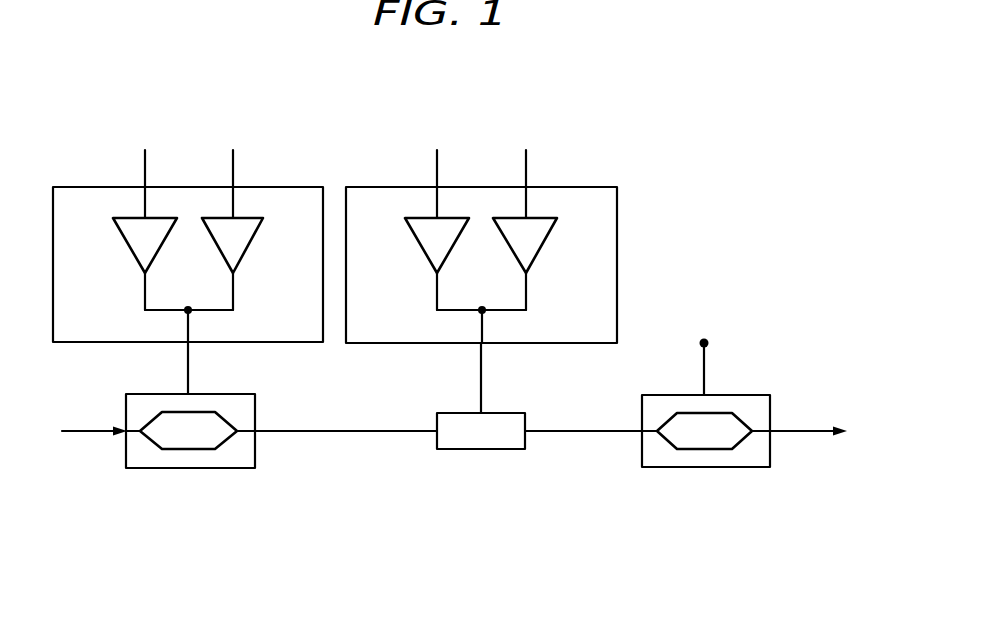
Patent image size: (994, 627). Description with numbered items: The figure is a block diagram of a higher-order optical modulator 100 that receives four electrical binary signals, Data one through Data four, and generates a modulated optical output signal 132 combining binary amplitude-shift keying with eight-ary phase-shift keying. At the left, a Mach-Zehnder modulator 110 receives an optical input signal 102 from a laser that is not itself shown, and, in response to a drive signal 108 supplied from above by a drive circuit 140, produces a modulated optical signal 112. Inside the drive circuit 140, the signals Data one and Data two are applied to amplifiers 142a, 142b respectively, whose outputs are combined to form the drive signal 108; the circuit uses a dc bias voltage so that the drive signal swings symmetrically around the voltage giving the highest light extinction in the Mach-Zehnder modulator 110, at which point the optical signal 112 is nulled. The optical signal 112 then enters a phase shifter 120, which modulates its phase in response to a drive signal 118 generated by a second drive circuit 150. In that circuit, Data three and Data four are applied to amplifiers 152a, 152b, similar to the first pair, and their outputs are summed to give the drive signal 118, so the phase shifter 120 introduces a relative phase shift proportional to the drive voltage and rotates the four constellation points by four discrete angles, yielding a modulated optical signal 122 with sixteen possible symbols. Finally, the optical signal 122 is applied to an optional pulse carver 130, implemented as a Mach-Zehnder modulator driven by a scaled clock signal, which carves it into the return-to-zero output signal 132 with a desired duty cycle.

The higher-order optical modulator 100 is at (452, 65).
The optical input signal 102 is at (93, 428).
The drive signal 108 is at (190, 371).
The Mach-Zehnder modulator 110 is at (193, 469).
The modulated optical signal 112 is at (348, 428).
The drive signal 118 is at (483, 371).
The phase shifter 120 is at (496, 444).
The modulated optical signal 122 is at (591, 428).
The pulse carver 130 is at (710, 468).
The modulated optical output signal 132 is at (807, 428).
The drive circuit 140 is at (192, 231).
The amplifier 142a is at (123, 250).
The amplifier 142b is at (250, 250).
The drive circuit 150 is at (487, 232).
The amplifier 152a is at (418, 250).
The amplifier 152b is at (542, 250).